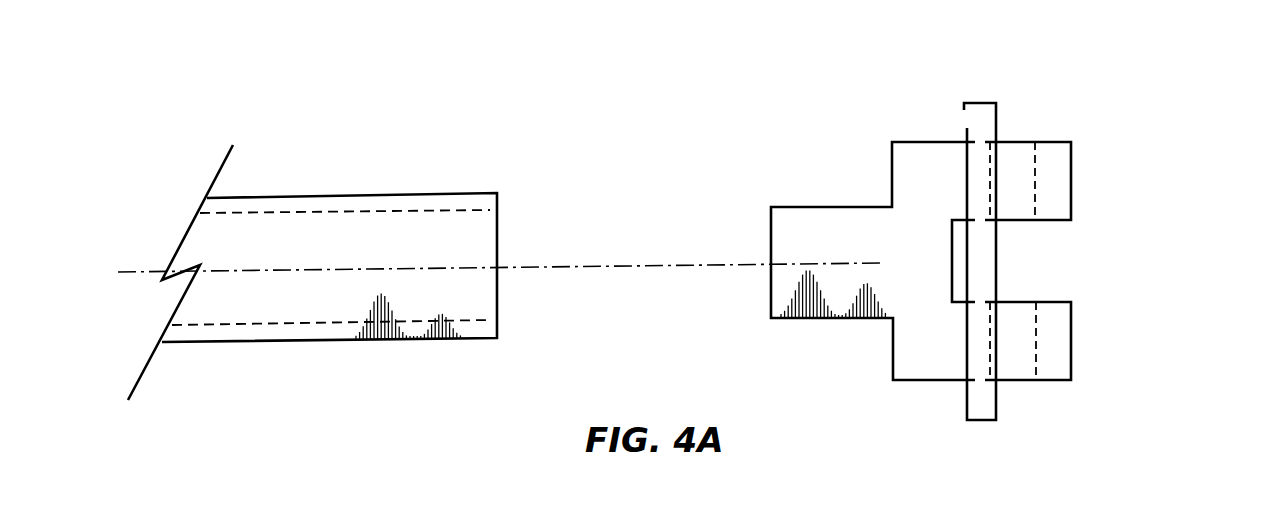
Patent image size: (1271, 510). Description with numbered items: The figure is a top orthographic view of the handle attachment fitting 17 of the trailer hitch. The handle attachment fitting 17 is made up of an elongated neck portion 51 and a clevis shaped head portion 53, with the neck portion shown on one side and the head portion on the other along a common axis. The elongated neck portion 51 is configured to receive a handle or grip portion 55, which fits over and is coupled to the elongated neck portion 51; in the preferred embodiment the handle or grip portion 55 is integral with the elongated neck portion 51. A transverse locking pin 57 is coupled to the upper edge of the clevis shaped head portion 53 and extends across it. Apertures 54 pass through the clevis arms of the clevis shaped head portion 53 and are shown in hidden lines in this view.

The handle attachment fitting 17 is at (738, 222).
The elongated neck portion 51 is at (843, 232).
The clevis shaped head portion 53 is at (1065, 170).
The apertures 54 is at (1037, 203).
The handle or grip portion 55 is at (360, 220).
The transverse locking pin 57 is at (978, 122).